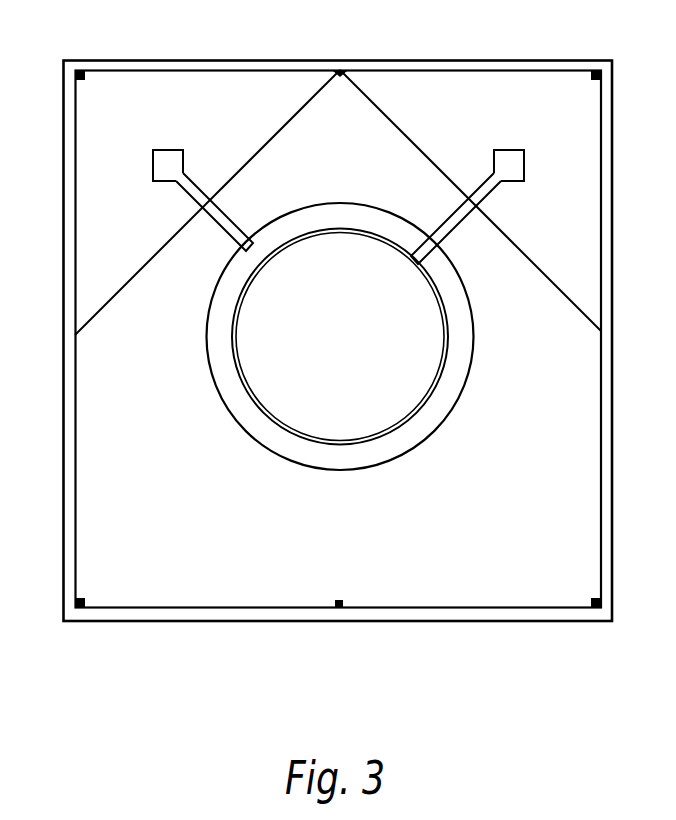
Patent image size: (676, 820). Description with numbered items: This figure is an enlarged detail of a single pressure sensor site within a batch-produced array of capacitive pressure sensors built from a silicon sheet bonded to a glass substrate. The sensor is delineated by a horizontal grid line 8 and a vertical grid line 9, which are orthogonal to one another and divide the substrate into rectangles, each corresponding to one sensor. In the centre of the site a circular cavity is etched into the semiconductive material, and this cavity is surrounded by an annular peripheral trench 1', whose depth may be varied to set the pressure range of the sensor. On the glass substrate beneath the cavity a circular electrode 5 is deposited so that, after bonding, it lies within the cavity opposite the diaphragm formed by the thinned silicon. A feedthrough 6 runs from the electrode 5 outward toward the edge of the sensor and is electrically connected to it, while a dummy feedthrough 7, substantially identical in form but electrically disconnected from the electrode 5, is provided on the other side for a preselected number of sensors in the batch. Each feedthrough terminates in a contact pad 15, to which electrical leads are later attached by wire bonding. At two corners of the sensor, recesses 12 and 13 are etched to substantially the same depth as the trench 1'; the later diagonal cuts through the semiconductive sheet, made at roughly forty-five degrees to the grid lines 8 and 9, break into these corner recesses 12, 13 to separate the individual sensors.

The annular peripheral trench 1' is at (364, 336).
The circular electrode 5 is at (353, 334).
The feedthrough 6 is at (485, 193).
The dummy feedthrough 7 is at (193, 192).
The horizontal grid line 8 is at (509, 61).
The vertical grid line 9 is at (64, 306).
The corner recess 12 is at (156, 120).
The corner recess 13 is at (536, 119).
The contact pad 15 is at (153, 168).